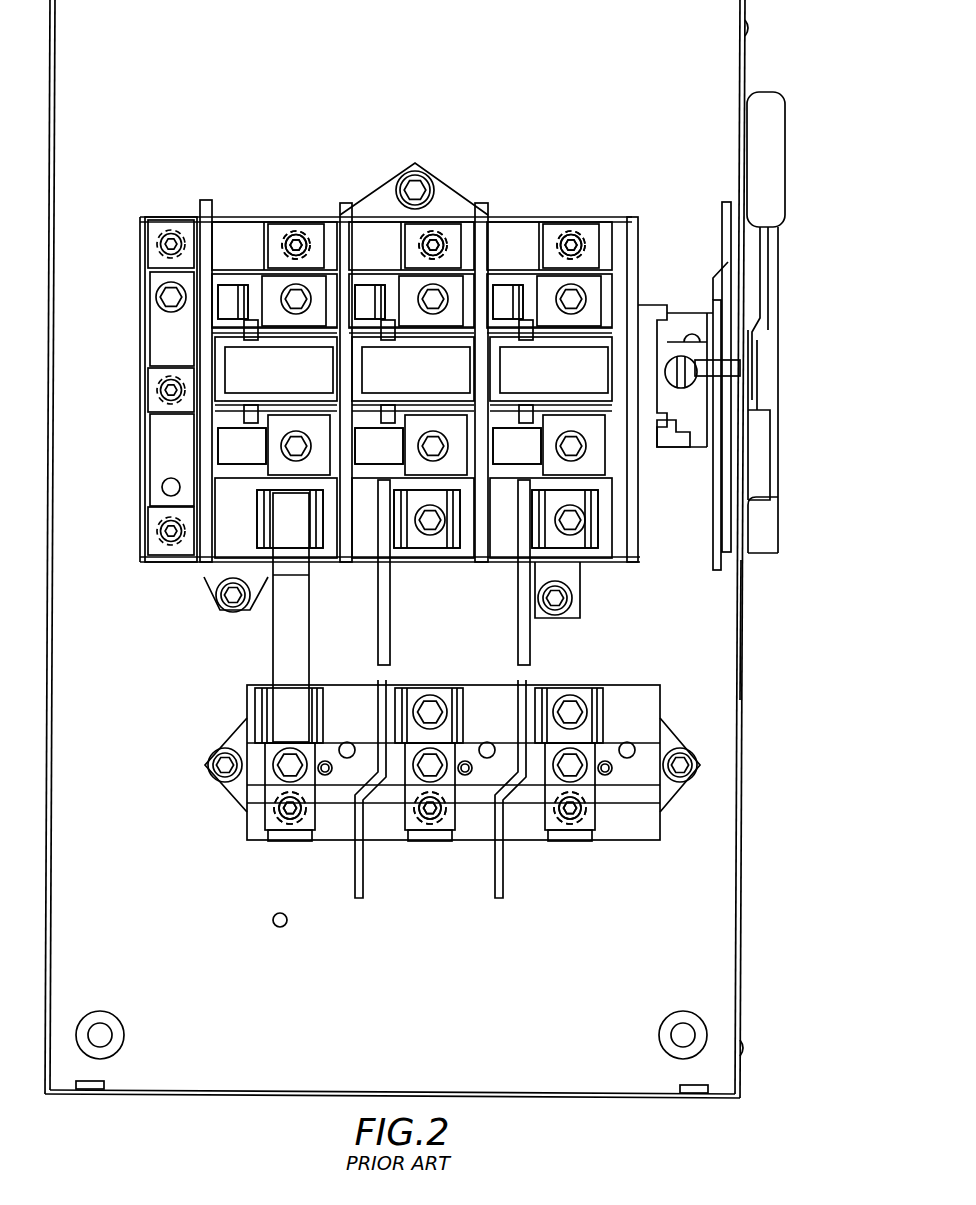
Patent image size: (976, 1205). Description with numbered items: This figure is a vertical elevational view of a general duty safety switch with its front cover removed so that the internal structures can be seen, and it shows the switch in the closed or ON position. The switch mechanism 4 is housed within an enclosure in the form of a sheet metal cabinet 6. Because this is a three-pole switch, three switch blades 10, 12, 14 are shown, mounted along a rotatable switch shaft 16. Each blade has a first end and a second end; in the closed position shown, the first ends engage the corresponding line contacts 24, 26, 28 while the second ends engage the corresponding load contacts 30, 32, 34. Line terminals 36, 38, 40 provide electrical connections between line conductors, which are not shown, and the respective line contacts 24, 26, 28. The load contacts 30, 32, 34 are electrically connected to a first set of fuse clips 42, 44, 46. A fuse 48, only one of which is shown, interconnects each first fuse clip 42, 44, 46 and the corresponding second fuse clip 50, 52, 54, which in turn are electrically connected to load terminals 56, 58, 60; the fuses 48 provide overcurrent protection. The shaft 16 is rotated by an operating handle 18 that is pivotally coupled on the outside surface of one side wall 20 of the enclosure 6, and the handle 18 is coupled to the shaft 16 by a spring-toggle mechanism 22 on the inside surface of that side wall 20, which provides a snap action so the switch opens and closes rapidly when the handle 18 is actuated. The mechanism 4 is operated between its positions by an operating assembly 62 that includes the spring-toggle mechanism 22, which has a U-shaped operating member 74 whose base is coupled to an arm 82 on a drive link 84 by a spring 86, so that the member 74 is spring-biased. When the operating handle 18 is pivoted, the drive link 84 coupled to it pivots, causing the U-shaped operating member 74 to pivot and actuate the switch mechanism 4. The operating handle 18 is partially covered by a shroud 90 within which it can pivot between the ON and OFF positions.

The switch mechanism 4 is at (478, 167).
The sheet metal cabinet 6 is at (230, 1102).
The switch blade 10 is at (255, 330).
The switch blade 12 is at (395, 330).
The switch blade 14 is at (533, 330).
The rotatable switch shaft 16 is at (215, 341).
The operating handle 18 is at (770, 268).
The side wall 20 is at (745, 594).
The spring-toggle mechanism 22 is at (690, 250).
The line contact 24 is at (246, 288).
The line contact 26 is at (385, 288).
The line contact 28 is at (525, 290).
The load contact 30 is at (223, 430).
The load contact 32 is at (370, 432).
The load contact 34 is at (512, 432).
The line terminal 36 is at (296, 235).
The line terminal 38 is at (436, 235).
The line terminal 40 is at (575, 235).
The first fuse clip 42 is at (260, 530).
The first fuse clip 44 is at (435, 548).
The first fuse clip 46 is at (598, 562).
The fuse 48 is at (304, 630).
The second fuse clip 50 is at (262, 690).
The second fuse clip 52 is at (462, 715).
The second fuse clip 54 is at (604, 715).
The load terminal 56 is at (275, 812).
The load terminal 58 is at (425, 822).
The load terminal 60 is at (573, 822).
The operating assembly 62 is at (792, 165).
The U-shaped operating member 74 is at (684, 450).
The arm 82 is at (733, 370).
The drive link 84 is at (770, 470).
The spring 86 is at (676, 350).
The shroud 90 is at (782, 522).